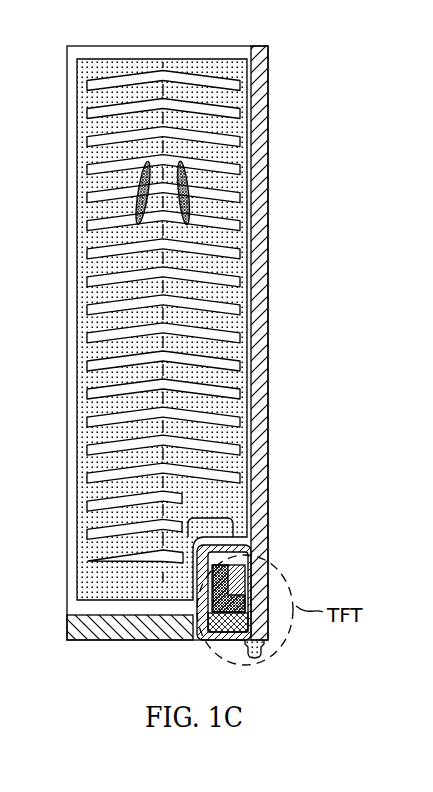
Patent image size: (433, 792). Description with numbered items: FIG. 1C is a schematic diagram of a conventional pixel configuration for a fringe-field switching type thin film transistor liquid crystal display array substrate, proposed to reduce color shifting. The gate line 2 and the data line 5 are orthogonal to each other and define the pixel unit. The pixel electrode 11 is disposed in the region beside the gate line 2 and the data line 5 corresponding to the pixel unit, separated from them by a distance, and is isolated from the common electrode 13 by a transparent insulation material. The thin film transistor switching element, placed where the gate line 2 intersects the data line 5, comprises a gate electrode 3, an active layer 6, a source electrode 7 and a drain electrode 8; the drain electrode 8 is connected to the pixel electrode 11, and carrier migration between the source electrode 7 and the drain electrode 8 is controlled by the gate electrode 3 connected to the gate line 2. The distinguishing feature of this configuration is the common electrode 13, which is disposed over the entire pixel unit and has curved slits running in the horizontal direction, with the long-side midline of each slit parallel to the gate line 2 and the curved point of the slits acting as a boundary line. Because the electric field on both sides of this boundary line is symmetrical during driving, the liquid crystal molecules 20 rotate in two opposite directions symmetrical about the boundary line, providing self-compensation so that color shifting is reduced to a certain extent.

The gate line 2 is at (75, 627).
The gate electrode 3 is at (203, 607).
The data line 5 is at (262, 492).
The active layer 6 is at (232, 600).
The source electrode 7 is at (233, 621).
The drain electrode 8 is at (248, 567).
The pixel electrode 11 is at (80, 258).
The common electrode 13 is at (72, 178).
The liquid crystal molecules 20 is at (198, 190).